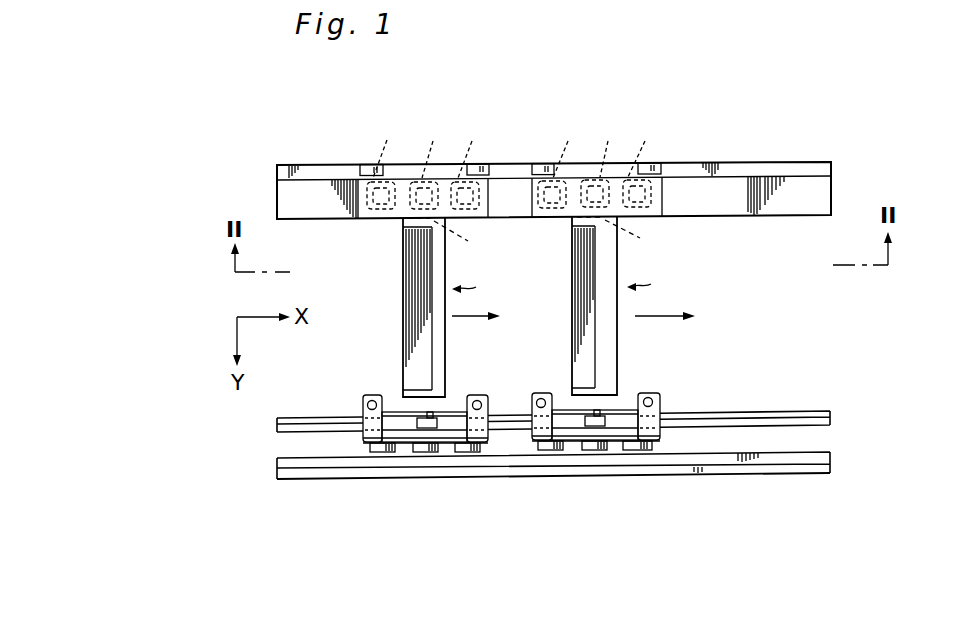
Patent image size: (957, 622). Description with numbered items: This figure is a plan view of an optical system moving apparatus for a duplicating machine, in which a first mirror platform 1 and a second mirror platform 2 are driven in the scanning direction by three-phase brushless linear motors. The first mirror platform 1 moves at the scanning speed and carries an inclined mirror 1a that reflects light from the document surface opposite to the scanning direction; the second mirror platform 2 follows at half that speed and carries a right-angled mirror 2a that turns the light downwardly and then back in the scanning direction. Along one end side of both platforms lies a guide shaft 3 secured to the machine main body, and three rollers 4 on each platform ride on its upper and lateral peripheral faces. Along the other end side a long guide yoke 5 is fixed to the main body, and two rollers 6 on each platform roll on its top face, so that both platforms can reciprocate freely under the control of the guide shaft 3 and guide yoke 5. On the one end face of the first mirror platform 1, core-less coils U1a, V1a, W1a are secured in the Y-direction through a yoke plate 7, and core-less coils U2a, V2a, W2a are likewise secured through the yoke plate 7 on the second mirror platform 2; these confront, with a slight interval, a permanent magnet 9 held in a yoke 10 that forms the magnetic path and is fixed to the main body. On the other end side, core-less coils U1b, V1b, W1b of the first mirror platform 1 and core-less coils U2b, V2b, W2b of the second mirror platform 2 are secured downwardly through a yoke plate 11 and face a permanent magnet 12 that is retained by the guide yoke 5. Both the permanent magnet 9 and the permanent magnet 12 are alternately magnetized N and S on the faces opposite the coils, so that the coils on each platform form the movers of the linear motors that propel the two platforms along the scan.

The first mirror platform 1 is at (609, 306).
The inclined mirror 1a is at (577, 292).
The second mirror platform 2 is at (422, 307).
The right-angled mirror 2a is at (407, 297).
The guide shaft 3 is at (775, 414).
The rollers 4 is at (370, 395).
The guide yoke 5 is at (752, 163).
The rollers 6 is at (368, 166).
The yoke plate 7 is at (370, 442).
The permanent magnet 9 is at (830, 458).
The yoke 10 is at (830, 470).
The yoke plate 11 is at (542, 236).
The permanent magnet 12 is at (825, 188).
The core-less coil U2b is at (384, 132).
The core-less coil V2b is at (429, 132).
The core-less coil W2b is at (477, 132).
The core-less coil U1b is at (579, 132).
The core-less coil V1b is at (619, 132).
The core-less coil W1b is at (667, 132).
The core-less coil U2a is at (380, 452).
The core-less coil V2a is at (423, 452).
The core-less coil W2a is at (470, 452).
The core-less coil U1a is at (550, 450).
The core-less coil V1a is at (597, 450).
The core-less coil W1a is at (638, 450).